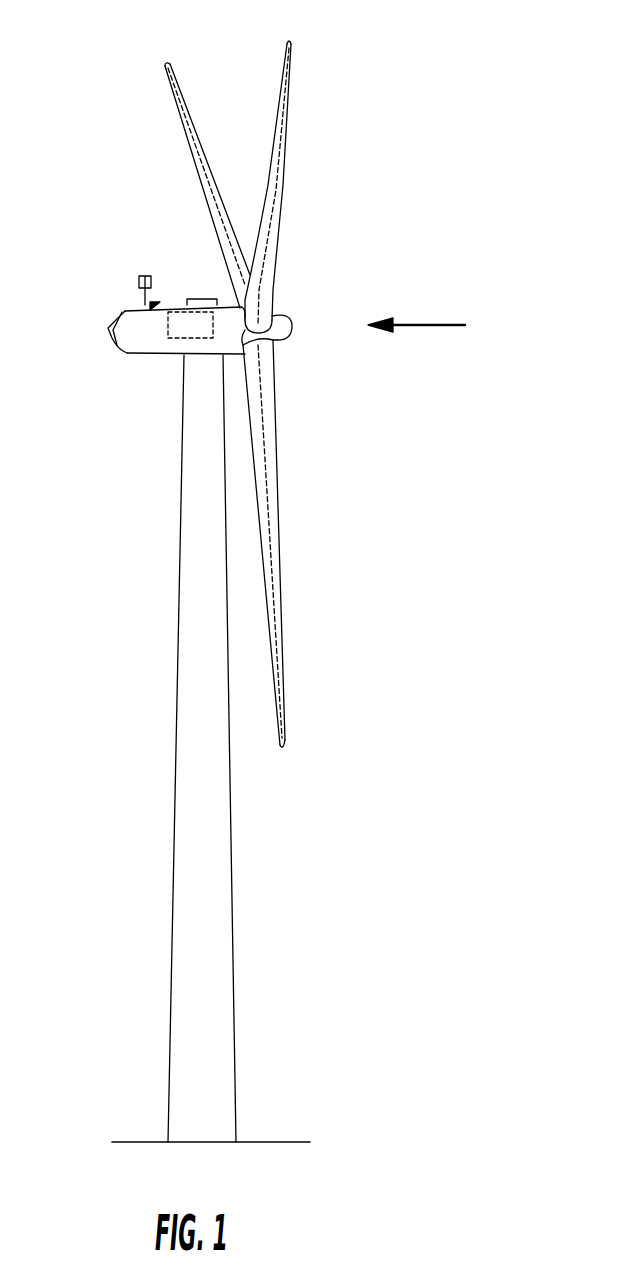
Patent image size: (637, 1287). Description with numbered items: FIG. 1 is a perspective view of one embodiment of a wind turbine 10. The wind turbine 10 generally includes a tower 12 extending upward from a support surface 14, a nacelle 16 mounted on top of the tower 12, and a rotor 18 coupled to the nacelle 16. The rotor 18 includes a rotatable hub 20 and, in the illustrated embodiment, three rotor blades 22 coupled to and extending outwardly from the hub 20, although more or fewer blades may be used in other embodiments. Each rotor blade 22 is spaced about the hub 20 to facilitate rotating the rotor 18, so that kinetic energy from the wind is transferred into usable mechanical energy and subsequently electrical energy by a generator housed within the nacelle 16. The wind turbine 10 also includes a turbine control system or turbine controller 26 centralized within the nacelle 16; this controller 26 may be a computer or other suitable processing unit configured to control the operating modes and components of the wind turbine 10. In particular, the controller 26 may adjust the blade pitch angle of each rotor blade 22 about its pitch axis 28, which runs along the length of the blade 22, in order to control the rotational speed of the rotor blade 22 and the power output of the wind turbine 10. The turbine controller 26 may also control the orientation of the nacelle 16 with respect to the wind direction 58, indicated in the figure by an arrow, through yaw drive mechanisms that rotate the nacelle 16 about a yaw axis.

The wind turbine 10 is at (390, 132).
The tower 12 is at (215, 808).
The support surface 14 is at (140, 1142).
The nacelle 16 is at (158, 358).
The rotor 18 is at (294, 304).
The rotatable hub 20 is at (284, 318).
The rotor blade 22 is at (195, 119).
The turbine controller 26 is at (168, 325).
The pitch axis 28 is at (212, 200).
The wind direction 58 is at (425, 325).